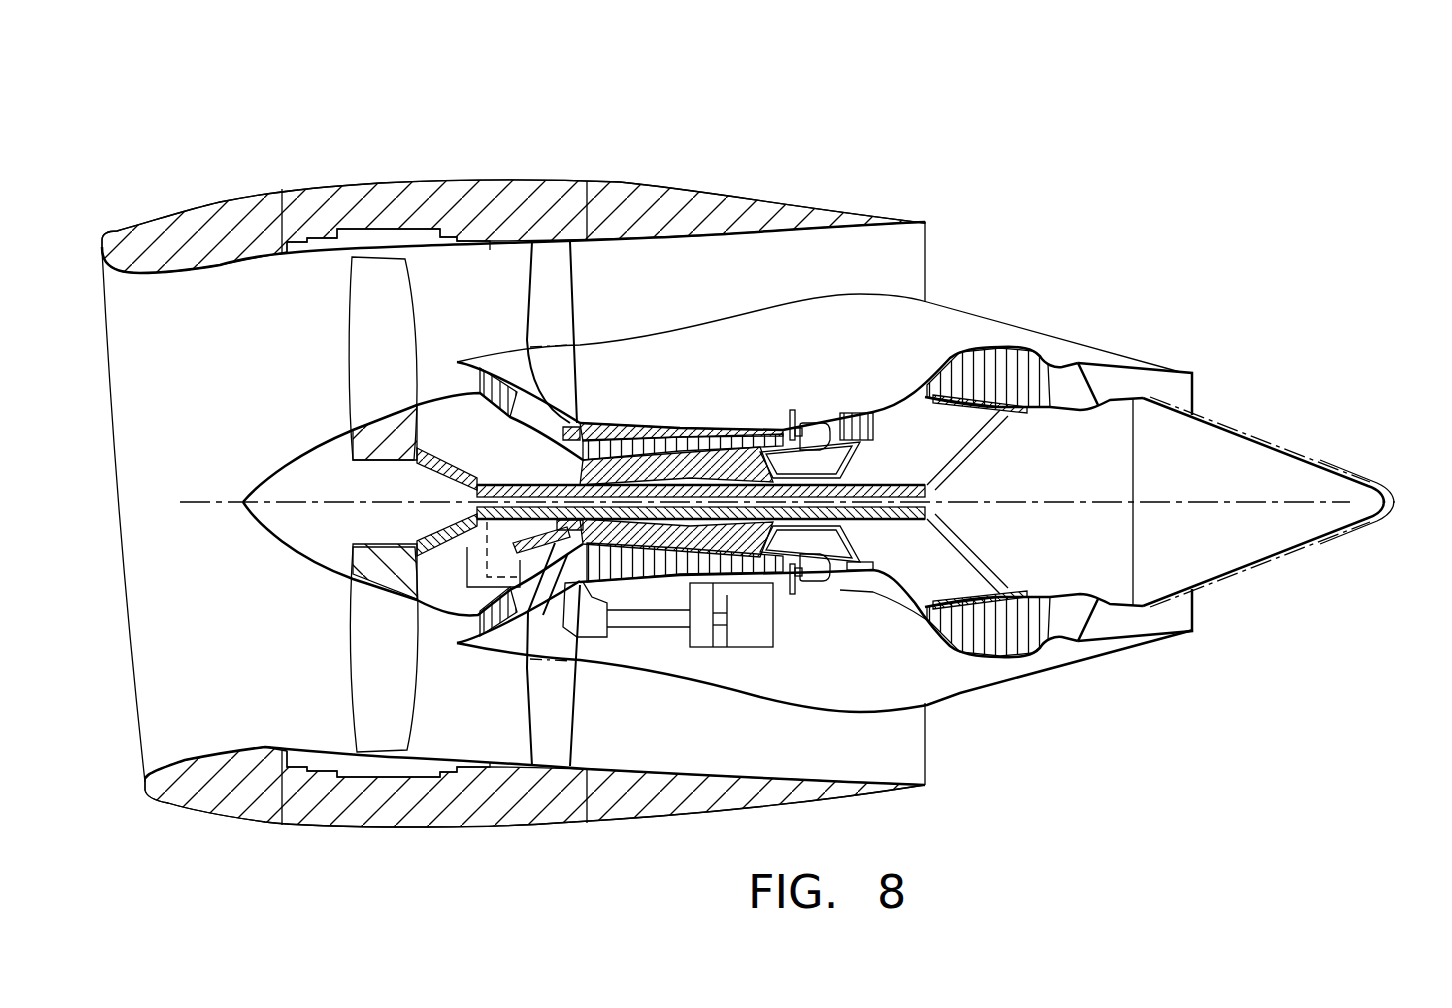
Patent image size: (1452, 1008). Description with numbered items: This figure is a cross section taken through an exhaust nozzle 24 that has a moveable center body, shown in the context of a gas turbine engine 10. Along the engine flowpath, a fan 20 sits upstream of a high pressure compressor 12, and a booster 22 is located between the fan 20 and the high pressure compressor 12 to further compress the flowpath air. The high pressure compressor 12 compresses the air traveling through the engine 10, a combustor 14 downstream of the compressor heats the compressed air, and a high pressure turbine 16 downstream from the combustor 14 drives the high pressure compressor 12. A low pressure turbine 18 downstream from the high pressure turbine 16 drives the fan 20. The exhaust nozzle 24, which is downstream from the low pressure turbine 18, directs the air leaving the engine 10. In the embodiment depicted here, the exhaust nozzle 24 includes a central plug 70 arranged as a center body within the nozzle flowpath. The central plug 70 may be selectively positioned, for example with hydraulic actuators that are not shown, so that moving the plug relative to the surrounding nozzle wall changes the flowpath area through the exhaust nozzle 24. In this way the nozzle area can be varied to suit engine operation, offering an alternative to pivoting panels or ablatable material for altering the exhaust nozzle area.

The gas turbine engine 10 is at (679, 128).
The high pressure compressor 12 is at (685, 412).
The combustor 14 is at (815, 396).
The high pressure turbine 16 is at (870, 385).
The low pressure turbine 18 is at (1008, 325).
The fan 20 is at (324, 303).
The booster 22 is at (511, 340).
The exhaust nozzle 24 is at (1162, 352).
The central plug 70 is at (1273, 438).